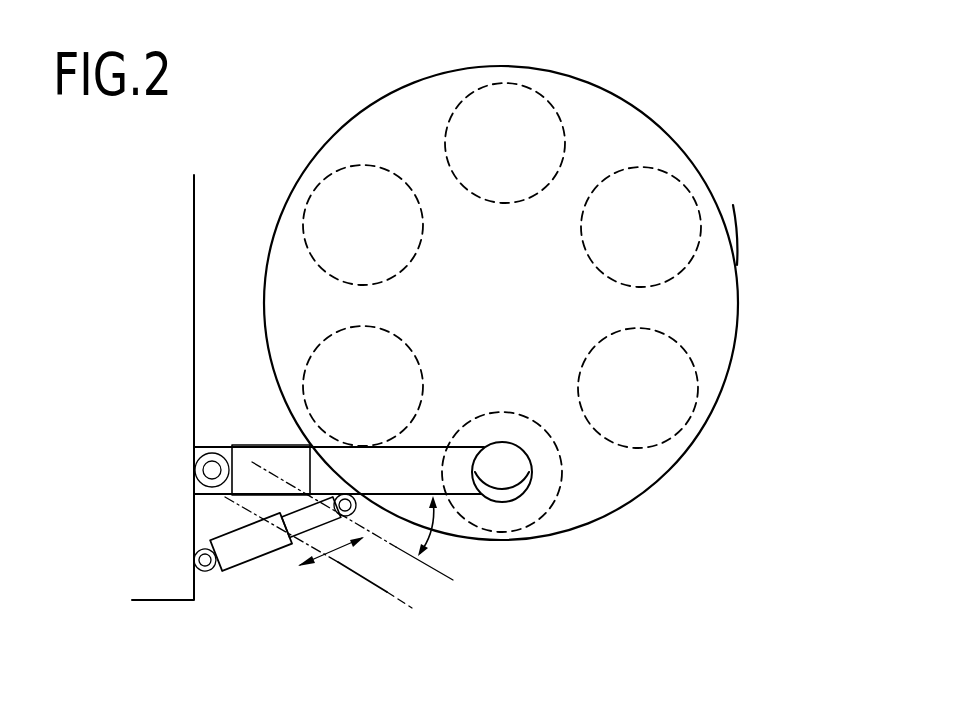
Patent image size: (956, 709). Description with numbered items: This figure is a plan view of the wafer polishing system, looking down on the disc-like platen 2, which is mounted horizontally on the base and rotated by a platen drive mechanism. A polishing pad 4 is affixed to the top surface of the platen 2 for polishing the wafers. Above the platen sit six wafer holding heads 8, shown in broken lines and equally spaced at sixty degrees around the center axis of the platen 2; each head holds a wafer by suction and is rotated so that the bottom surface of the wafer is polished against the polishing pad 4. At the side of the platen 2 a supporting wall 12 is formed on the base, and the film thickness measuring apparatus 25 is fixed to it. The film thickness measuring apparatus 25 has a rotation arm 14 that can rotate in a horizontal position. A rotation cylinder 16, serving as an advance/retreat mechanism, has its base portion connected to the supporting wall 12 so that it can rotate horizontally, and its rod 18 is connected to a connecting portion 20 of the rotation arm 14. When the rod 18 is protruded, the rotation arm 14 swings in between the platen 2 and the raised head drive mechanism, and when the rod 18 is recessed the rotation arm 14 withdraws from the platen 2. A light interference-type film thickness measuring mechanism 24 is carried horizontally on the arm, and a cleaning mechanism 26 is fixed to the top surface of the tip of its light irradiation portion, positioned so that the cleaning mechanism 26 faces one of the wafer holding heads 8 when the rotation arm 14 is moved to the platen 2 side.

The platen 2 is at (741, 279).
The polishing pad 4 is at (713, 257).
The wafer holding heads 8 is at (562, 122).
The supporting wall 12 is at (199, 248).
The rotation arm 14 is at (263, 446).
The rotation cylinder 16 is at (241, 547).
The rod 18 is at (318, 528).
The connecting portion 20 is at (357, 507).
The light interference-type film thickness measuring mechanism 24 is at (437, 448).
The film thickness measuring apparatus 25 is at (512, 510).
The cleaning mechanism 26 is at (516, 442).